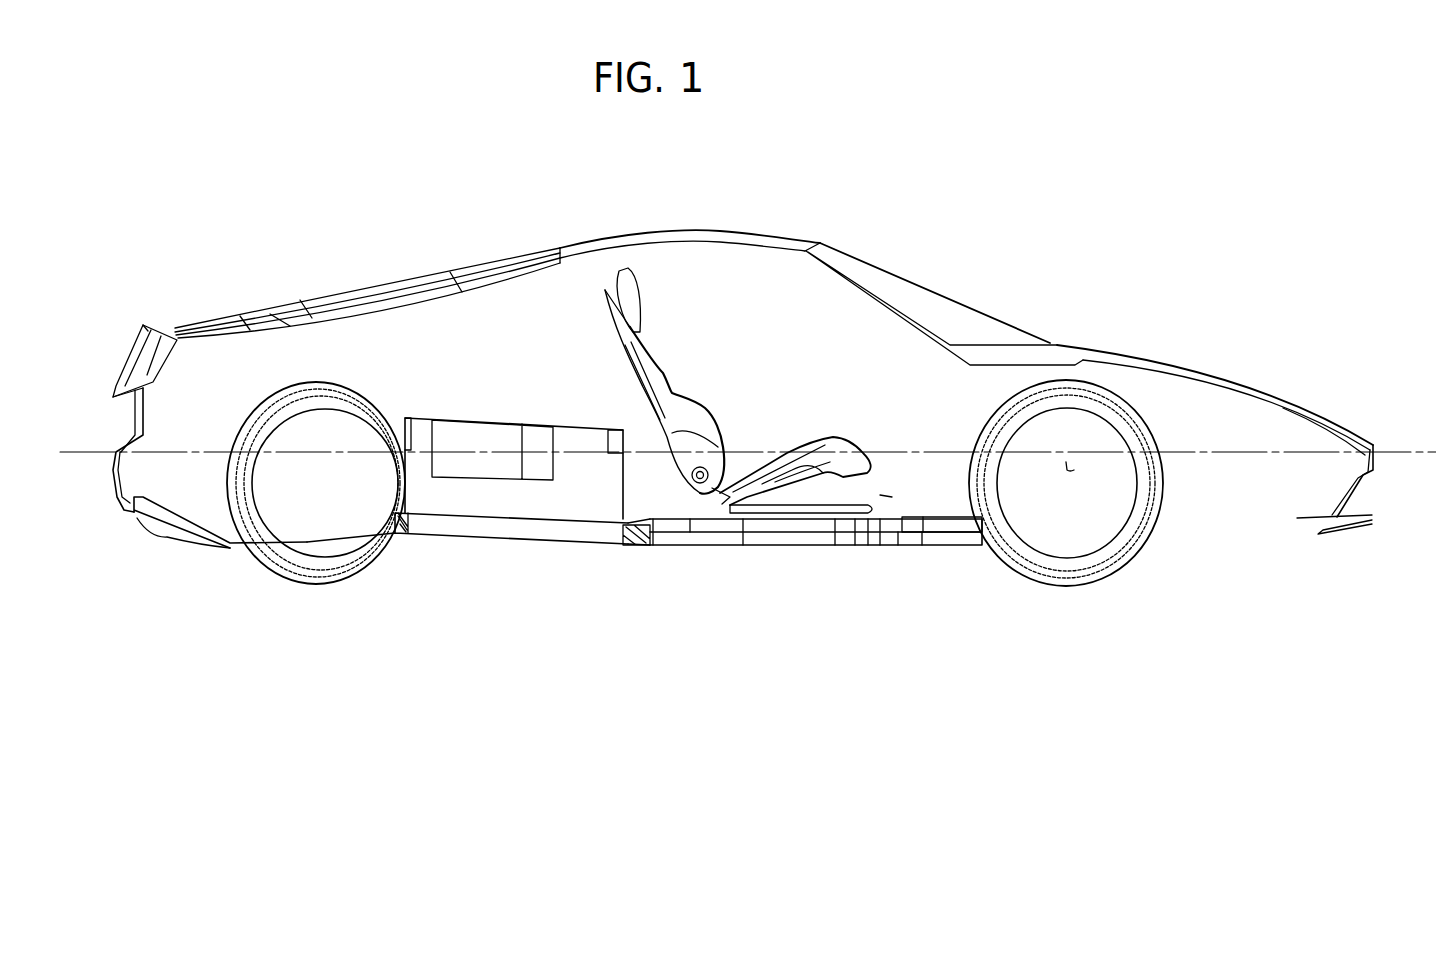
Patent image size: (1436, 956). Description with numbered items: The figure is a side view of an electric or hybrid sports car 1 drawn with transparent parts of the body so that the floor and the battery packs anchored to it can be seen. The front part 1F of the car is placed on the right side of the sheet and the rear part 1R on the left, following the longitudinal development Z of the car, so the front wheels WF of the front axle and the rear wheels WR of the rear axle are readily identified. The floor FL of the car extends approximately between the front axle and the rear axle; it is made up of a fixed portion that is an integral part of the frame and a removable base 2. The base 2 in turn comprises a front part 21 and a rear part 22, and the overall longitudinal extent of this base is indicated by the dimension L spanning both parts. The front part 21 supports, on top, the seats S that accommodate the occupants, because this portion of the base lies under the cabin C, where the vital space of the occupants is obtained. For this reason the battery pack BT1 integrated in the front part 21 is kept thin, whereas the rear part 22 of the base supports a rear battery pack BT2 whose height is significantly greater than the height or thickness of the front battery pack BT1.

The car 1 is at (960, 182).
The rear part 1R is at (193, 293).
The front part 1F is at (1298, 338).
The rear wheels WR is at (298, 575).
The front wheels WF is at (1120, 563).
The seats S is at (730, 378).
The cabin C is at (831, 357).
The floor FL is at (892, 497).
The longitudinal development Z is at (1403, 450).
The base 2 is at (638, 558).
The front part 21 is at (798, 542).
The rear part 22 is at (502, 532).
The battery pack BT1 is at (938, 527).
The rear battery pack BT2 is at (584, 437).
The longitudinal length L is at (573, 530).